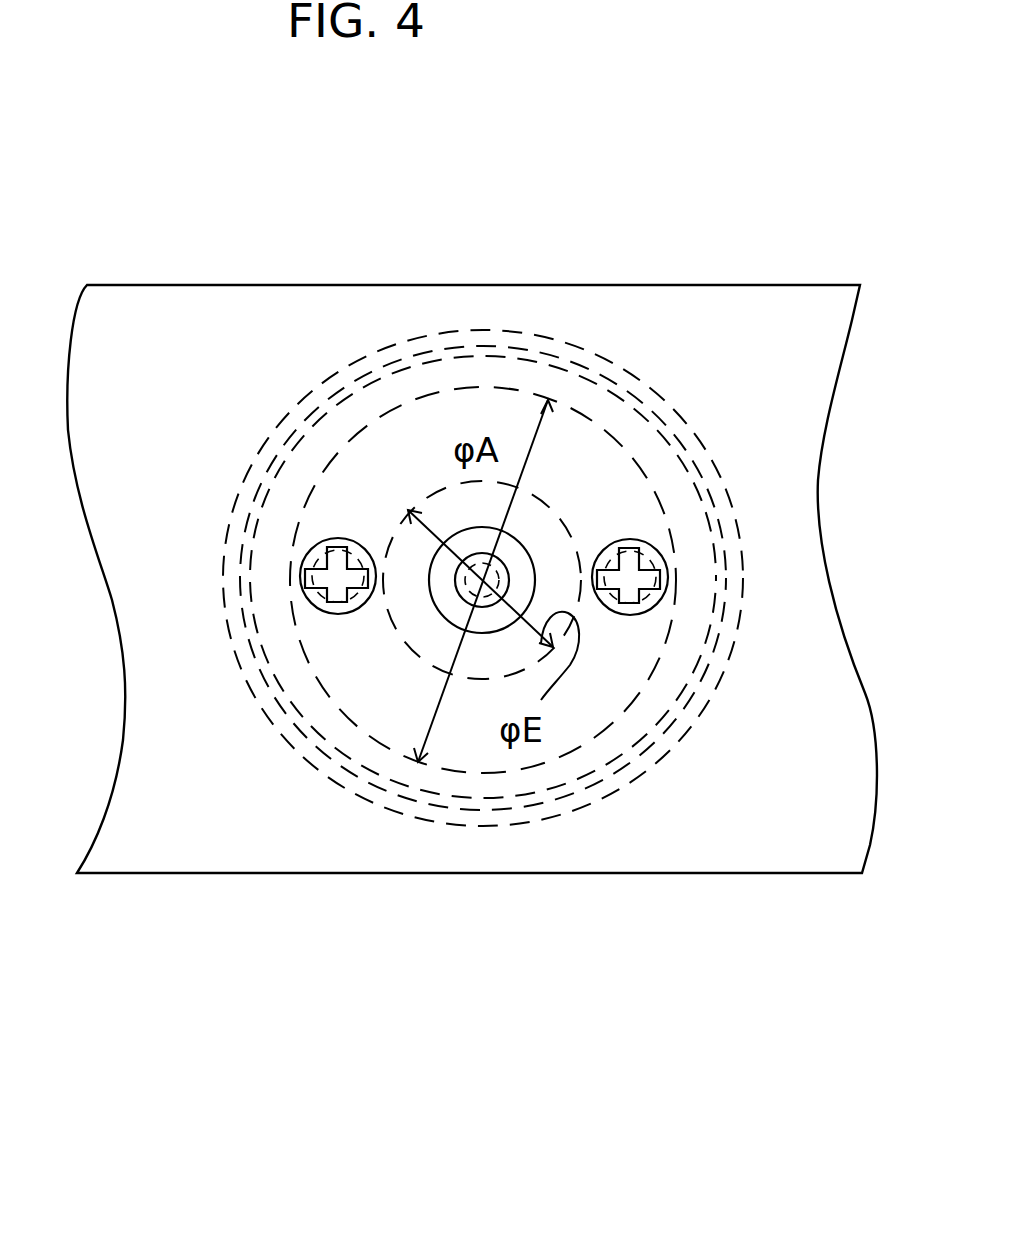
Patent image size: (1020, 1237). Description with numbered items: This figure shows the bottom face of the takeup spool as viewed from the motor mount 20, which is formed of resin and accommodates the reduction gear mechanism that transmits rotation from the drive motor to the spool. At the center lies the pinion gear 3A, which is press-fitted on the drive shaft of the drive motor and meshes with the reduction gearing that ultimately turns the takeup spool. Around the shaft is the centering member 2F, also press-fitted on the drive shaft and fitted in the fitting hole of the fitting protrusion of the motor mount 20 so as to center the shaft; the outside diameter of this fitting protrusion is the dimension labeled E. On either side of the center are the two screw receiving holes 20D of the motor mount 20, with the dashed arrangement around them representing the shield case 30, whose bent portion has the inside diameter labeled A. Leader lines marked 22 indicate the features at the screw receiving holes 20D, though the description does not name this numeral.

The motor mount 20 is at (783, 307).
The shield case 30 is at (713, 483).
The screw receiving holes 20D is at (325, 590).
The screw hole 22 is at (357, 597).
The centering member 2F is at (453, 607).
The pinion gear 3A is at (491, 581).